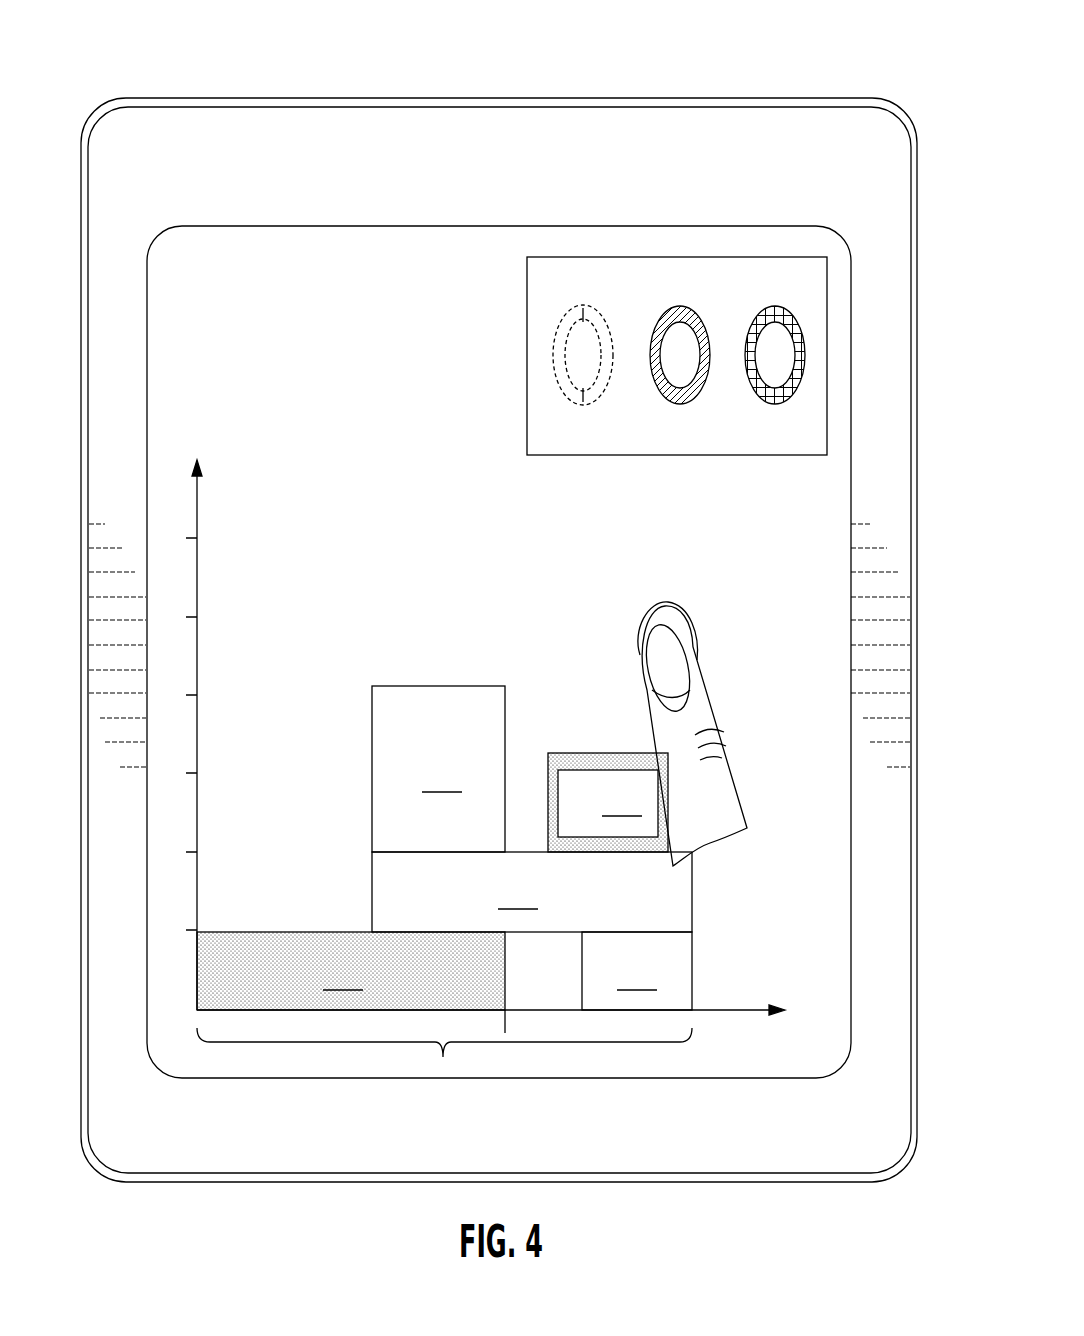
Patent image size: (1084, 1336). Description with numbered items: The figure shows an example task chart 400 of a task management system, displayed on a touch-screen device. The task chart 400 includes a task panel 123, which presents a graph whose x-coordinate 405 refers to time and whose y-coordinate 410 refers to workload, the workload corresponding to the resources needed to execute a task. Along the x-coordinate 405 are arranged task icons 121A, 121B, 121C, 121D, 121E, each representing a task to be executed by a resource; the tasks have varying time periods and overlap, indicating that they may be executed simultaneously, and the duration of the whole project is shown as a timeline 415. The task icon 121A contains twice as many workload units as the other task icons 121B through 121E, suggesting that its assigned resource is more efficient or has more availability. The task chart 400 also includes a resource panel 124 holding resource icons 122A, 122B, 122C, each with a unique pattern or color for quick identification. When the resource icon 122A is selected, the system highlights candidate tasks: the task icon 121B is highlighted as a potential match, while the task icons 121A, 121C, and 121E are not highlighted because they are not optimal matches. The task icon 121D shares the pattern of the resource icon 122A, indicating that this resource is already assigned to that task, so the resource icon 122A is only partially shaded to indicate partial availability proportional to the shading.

The task chart 400 is at (564, 98).
The y-coordinate 410 is at (198, 500).
The x-coordinate 405 is at (745, 1010).
The timeline 415 is at (428, 1095).
The task panel 123 is at (280, 800).
The resource panel 124 is at (527, 372).
The resource icon 122A is at (583, 408).
The resource icon 122B is at (681, 302).
The resource icon 122C is at (775, 408).
The task icon 121A is at (438, 769).
The task icon 121B is at (608, 802).
The task icon 121C is at (532, 892).
The task icon 121D is at (351, 982).
The task icon 121E is at (637, 971).